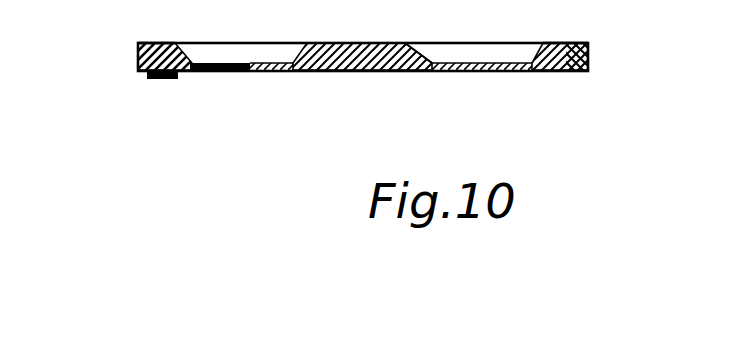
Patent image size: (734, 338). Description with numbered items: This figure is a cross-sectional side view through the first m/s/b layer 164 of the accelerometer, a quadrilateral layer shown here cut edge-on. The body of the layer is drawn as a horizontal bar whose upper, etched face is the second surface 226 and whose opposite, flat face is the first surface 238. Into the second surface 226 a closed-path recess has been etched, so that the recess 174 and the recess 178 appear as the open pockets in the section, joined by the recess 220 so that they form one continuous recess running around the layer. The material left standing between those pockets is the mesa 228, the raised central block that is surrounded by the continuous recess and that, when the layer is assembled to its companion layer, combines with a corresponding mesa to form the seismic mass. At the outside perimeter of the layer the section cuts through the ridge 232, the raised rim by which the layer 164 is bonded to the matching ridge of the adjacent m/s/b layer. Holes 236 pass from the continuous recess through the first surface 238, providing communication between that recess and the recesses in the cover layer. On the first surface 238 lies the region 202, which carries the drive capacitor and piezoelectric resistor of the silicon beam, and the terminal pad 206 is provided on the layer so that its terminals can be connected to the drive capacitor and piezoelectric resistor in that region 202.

The first m/s/b layer 164 is at (588, 49).
The recess 174 is at (500, 45).
The recess 178 is at (103, 2).
The region 202 is at (248, 97).
The terminal pad 206 is at (155, 79).
The recess 220 is at (548, 0).
The second surface 226 is at (330, 43).
The mesa 228 is at (493, 0).
The ridge 232 is at (157, 43).
The holes 236 is at (208, 0).
The first surface 238 is at (372, 73).